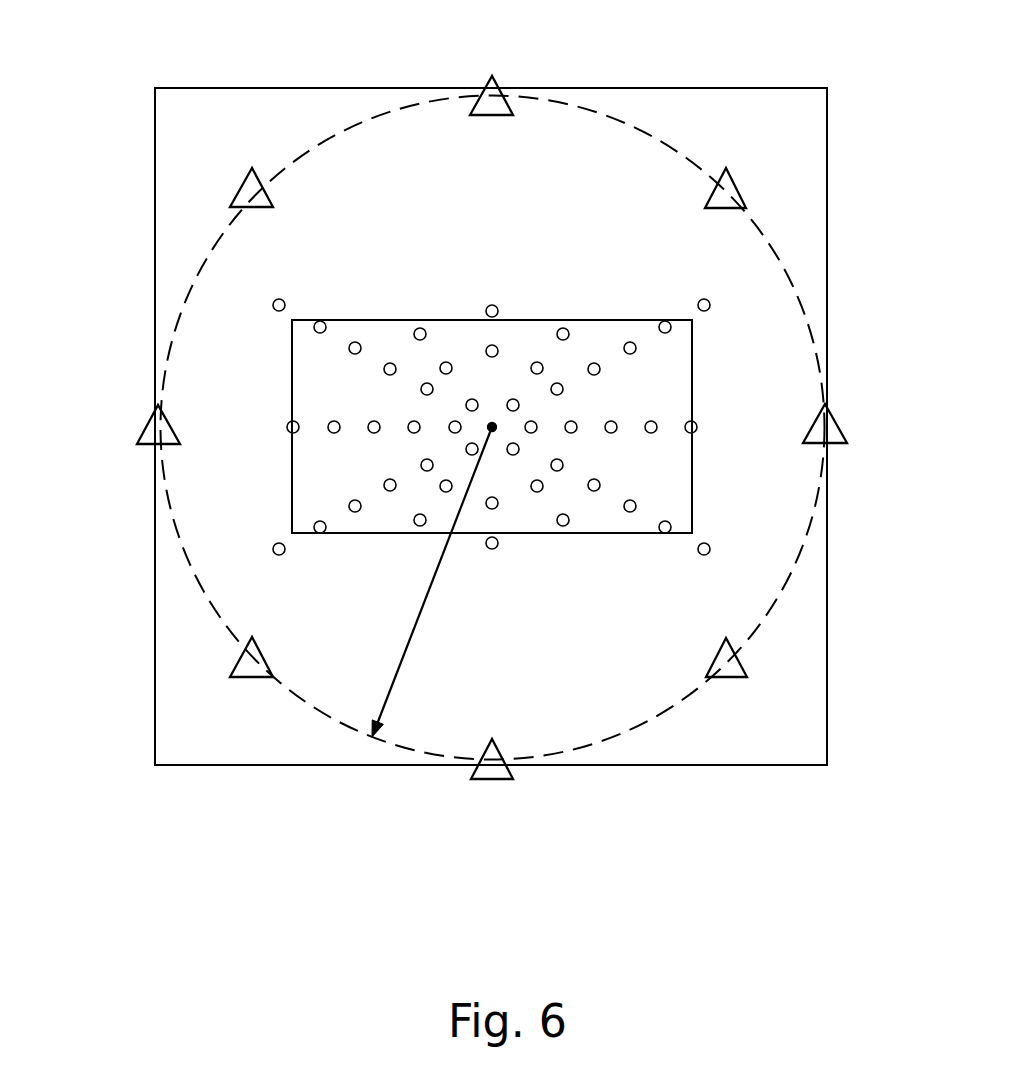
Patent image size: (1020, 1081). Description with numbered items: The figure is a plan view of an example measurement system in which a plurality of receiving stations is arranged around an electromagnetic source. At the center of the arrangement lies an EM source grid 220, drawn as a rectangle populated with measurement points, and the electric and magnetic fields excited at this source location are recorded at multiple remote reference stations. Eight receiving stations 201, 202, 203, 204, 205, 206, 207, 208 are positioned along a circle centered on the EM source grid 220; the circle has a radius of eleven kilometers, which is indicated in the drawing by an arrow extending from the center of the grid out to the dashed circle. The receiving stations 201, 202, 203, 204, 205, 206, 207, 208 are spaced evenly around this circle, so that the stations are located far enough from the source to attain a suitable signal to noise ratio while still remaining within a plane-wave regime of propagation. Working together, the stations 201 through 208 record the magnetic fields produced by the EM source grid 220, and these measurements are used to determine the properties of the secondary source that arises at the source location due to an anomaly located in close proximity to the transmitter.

The receiving station 201 is at (242, 187).
The receiving station 202 is at (495, 80).
The receiving station 203 is at (737, 187).
The receiving station 204 is at (840, 424).
The receiving station 205 is at (745, 665).
The receiving station 206 is at (502, 780).
The receiving station 207 is at (232, 662).
The receiving station 208 is at (146, 425).
The EM source grid 220 is at (693, 402).